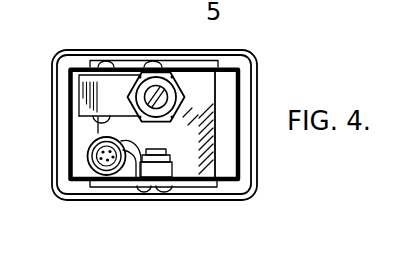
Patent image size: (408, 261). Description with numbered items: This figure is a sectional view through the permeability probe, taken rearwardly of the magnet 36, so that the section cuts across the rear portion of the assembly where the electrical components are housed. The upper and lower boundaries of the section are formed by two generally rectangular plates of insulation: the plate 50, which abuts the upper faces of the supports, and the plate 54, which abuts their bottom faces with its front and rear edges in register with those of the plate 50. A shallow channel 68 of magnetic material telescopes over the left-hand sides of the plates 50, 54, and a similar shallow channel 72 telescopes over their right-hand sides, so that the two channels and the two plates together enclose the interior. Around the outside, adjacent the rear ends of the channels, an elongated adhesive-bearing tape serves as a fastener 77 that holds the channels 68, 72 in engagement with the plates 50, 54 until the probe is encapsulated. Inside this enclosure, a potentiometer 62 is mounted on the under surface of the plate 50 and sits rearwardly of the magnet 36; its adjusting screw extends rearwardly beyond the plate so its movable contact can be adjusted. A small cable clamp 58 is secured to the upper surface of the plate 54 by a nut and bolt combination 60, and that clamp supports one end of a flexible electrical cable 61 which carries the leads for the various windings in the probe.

The permanent magnet 36 is at (98, 127).
The plate of insulation 50 is at (238, 71).
The plate of insulation 54 is at (200, 177).
The cable clamp 58 is at (88, 154).
The nut and bolt combination 60 is at (167, 190).
The flexible electrical cable 61 is at (110, 160).
The potentiometer 62 is at (119, 83).
The shallow channel 68 is at (243, 158).
The shallow channel 72 is at (63, 80).
The fastener 77 is at (251, 56).